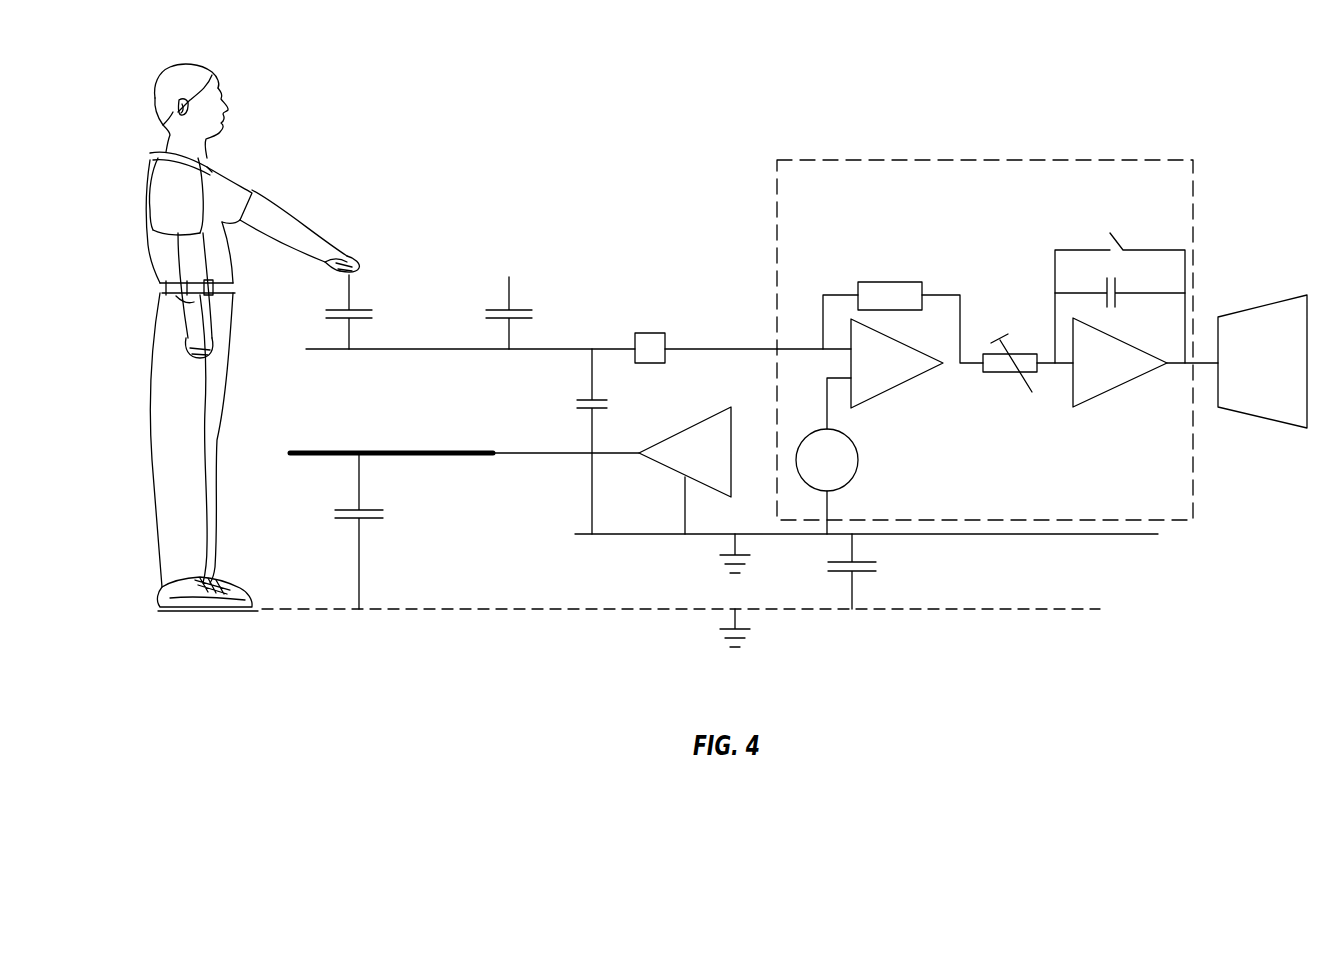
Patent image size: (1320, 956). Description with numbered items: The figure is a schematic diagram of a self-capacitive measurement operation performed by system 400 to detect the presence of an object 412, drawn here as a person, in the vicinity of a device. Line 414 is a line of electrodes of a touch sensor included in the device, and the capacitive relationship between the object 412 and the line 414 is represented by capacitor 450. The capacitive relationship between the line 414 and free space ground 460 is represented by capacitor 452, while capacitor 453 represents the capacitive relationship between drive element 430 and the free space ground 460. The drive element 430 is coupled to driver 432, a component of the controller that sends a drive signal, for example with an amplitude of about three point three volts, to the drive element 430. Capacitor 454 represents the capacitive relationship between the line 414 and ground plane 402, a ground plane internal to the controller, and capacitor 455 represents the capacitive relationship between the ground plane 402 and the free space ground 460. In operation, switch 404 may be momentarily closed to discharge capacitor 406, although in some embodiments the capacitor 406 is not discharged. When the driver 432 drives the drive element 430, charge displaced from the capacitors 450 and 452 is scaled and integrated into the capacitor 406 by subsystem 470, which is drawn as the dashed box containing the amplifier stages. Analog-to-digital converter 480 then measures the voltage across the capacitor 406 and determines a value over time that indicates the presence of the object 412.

The system 400 is at (1143, 101).
The ground plane 402 is at (1122, 534).
The switch 404 is at (1118, 243).
The capacitor 406 is at (1122, 304).
The object 412 is at (334, 244).
The line 414 is at (370, 350).
The drive element 430 is at (393, 452).
The driver 432 is at (720, 468).
The capacitor 450 is at (340, 308).
The capacitor 452 is at (498, 308).
The capacitor 453 is at (372, 518).
The capacitor 454 is at (605, 396).
The capacitor 455 is at (866, 572).
The free space ground 460 is at (548, 610).
The subsystem 470 is at (868, 158).
The analog-to-digital converter (ADC) 480 is at (1281, 395).